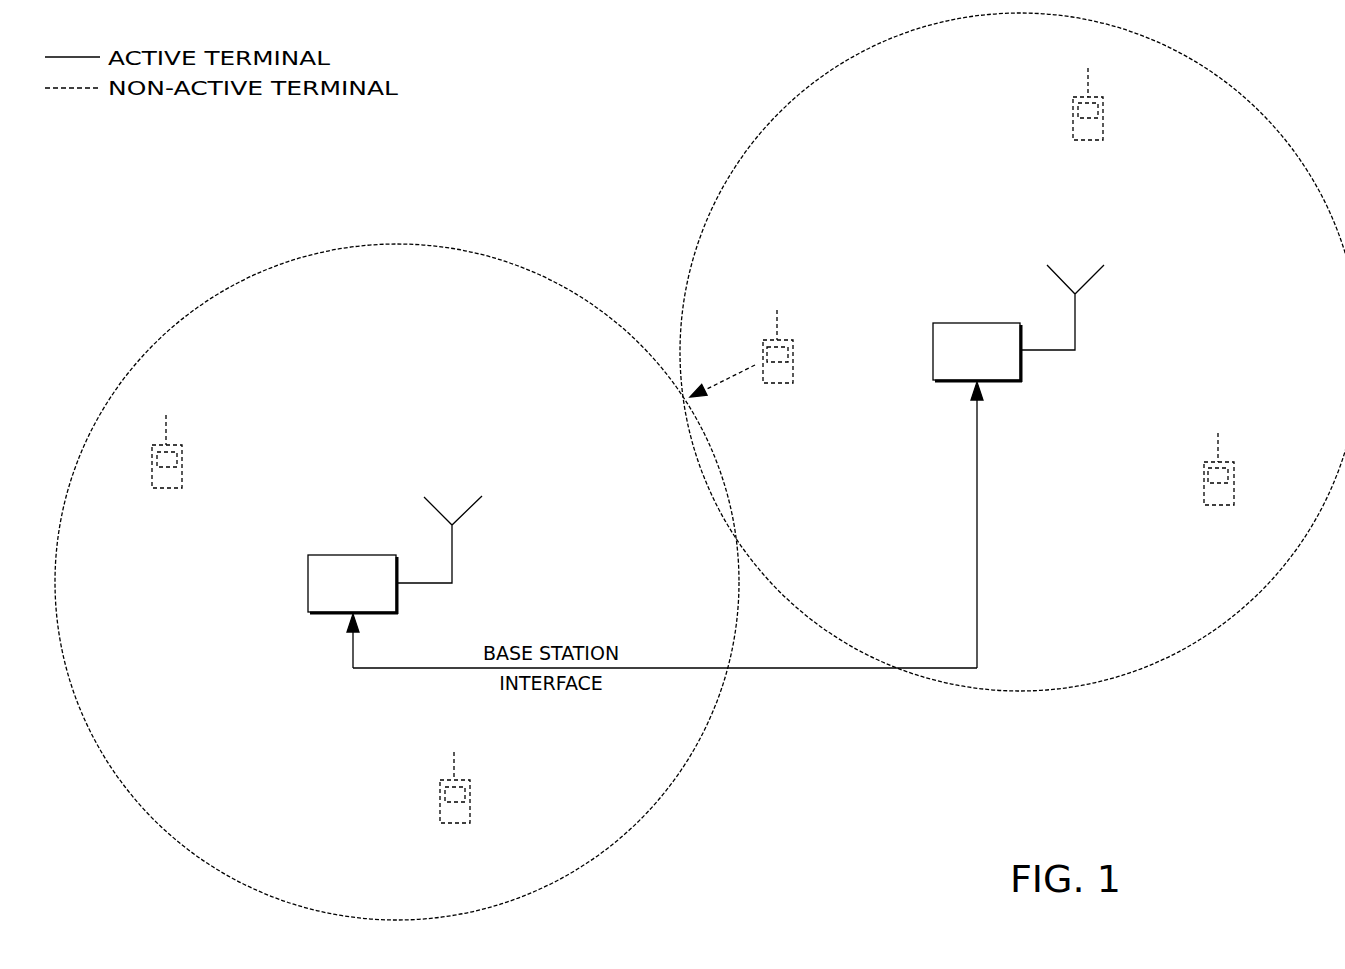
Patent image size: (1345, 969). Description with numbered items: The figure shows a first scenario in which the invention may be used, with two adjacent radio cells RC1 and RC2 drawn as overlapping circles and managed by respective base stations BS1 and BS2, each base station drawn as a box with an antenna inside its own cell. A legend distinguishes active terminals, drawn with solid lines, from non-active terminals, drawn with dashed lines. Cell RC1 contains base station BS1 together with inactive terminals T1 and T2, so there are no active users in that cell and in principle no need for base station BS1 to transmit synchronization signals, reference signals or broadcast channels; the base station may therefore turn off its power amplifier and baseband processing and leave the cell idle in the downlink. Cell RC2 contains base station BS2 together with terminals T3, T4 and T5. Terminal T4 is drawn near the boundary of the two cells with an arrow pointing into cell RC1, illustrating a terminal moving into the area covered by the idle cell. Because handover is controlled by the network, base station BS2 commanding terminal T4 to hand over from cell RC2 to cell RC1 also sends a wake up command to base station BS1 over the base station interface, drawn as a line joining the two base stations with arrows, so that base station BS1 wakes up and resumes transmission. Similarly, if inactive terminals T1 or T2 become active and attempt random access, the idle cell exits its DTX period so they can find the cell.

The radio cell RC1 is at (405, 245).
The radio cell RC2 is at (1020, 690).
The base station BS1 is at (395, 555).
The base station BS2 is at (1018, 323).
The terminal T1 is at (182, 458).
The terminal T2 is at (470, 793).
The terminal 3 T3 is at (1103, 110).
The terminal T4 is at (793, 352).
The terminal 5 T5 is at (1234, 475).